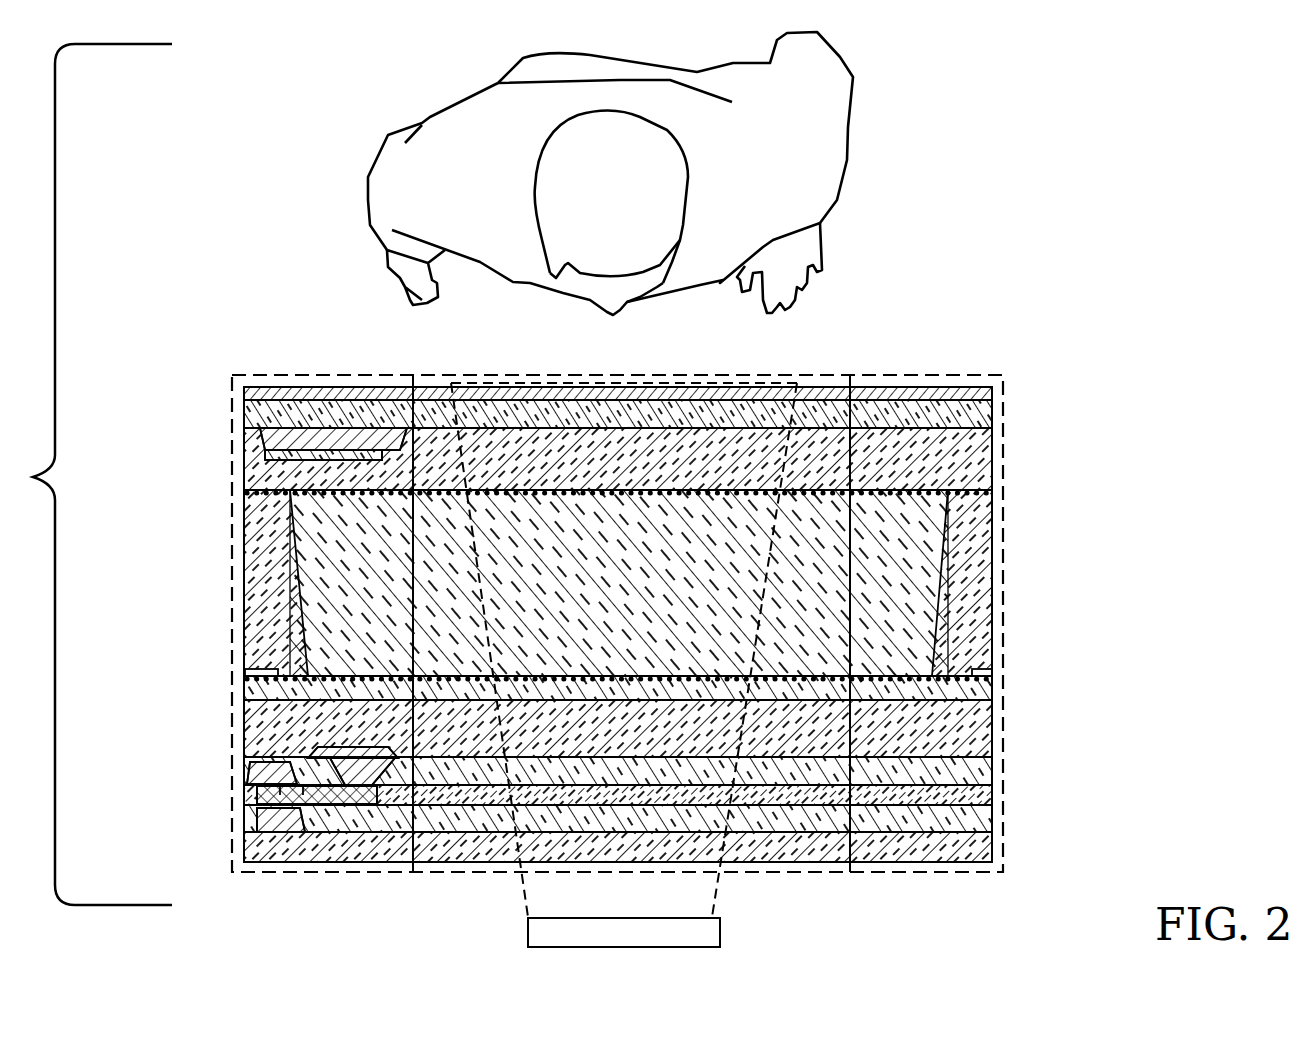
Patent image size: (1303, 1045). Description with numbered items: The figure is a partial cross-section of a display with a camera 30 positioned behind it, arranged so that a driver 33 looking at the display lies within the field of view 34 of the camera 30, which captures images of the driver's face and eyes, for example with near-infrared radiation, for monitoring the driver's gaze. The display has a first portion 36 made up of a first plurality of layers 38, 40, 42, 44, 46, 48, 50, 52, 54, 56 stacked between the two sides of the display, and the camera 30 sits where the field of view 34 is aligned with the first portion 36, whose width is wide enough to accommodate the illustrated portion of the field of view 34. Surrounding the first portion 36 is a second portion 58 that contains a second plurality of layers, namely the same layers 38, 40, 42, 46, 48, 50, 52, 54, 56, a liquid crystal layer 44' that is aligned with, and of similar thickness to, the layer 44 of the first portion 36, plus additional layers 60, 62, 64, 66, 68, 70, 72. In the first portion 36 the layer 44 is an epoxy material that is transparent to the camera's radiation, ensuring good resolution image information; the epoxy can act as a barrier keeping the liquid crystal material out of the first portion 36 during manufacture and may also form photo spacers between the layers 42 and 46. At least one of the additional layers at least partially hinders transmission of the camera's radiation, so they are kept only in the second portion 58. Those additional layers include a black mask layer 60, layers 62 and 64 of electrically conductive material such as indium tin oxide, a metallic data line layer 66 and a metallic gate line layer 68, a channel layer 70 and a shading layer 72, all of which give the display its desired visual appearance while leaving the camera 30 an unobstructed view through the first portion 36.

The camera 30 is at (722, 935).
The driver 33 is at (663, 290).
The field of view 34 is at (775, 562).
The first portion 36 is at (847, 374).
The layer 38 is at (992, 389).
The layer 40 is at (985, 415).
The layer 42 is at (985, 466).
The layer 44 is at (618, 584).
The liquid crystal layer 44' is at (621, 583).
The layer 46 is at (985, 690).
The layer 48 is at (985, 736).
The layer 50 is at (985, 778).
The layer 52 is at (985, 797).
The layer 54 is at (985, 822).
The layer 56 is at (985, 855).
The second portion 58 is at (965, 374).
The black mask layer 60 is at (278, 433).
The layer 62 is at (257, 672).
The layer 64 is at (258, 698).
The data line layer 66 is at (322, 750).
The gate line layer 68 is at (255, 778).
The channel layer 70 is at (255, 793).
The shading layer 72 is at (252, 820).